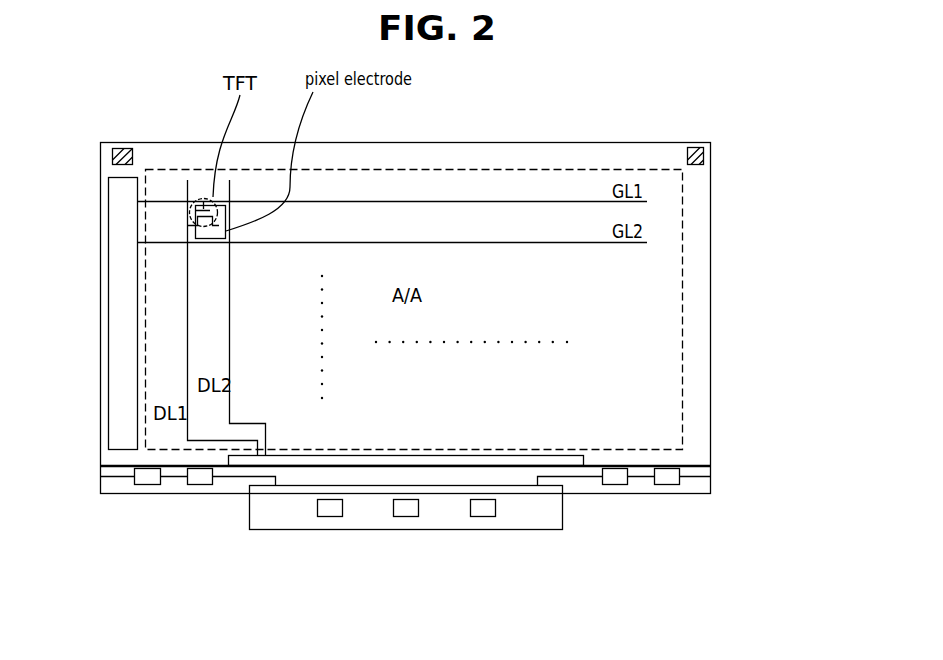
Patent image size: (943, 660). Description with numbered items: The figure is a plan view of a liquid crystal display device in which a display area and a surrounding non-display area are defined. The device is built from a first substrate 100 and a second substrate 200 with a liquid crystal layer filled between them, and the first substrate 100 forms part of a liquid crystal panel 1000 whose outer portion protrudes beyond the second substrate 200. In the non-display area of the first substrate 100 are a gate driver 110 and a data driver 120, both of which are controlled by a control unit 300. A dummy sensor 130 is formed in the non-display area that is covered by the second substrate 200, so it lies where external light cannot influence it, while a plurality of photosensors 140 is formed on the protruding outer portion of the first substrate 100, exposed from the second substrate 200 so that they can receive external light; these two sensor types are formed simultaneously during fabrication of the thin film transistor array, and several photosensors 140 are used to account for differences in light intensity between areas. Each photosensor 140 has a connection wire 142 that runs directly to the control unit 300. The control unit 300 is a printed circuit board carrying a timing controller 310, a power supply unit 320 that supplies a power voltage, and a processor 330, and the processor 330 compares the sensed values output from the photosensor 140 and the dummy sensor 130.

The liquid crystal panel 1000 is at (775, 417).
The second substrate 200 is at (691, 463).
The first substrate 100 is at (690, 477).
The dummy sensor 130 is at (122, 147).
The gate driver 110 is at (113, 323).
The data driver 120 is at (570, 462).
The connection wire 142 is at (173, 476).
The photosensor 140 is at (152, 484).
The control unit 300 is at (262, 530).
The timing controller 310 is at (329, 510).
The power supply unit 320 is at (403, 510).
The processor 330 is at (482, 510).